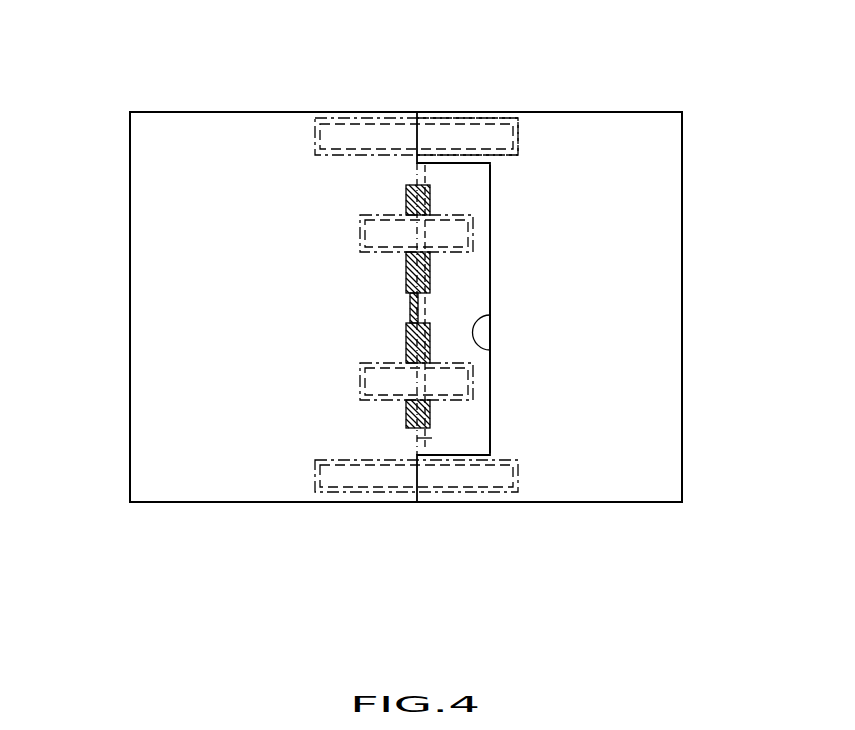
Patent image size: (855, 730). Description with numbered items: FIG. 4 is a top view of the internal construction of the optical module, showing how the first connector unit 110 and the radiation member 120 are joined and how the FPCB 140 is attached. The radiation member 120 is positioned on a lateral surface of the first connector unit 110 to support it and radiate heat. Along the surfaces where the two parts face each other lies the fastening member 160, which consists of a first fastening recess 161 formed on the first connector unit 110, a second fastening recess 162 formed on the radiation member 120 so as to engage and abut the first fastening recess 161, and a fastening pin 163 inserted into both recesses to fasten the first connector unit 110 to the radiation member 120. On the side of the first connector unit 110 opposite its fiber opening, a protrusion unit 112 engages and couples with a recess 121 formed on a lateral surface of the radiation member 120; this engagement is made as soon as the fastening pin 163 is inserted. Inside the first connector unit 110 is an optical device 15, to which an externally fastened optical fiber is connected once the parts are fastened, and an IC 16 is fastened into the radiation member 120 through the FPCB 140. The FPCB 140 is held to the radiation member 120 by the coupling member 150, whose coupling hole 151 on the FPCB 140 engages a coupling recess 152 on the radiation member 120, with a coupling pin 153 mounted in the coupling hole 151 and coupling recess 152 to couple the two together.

The optical device 15 is at (406, 189).
The IC 16 is at (410, 321).
The first connector unit 110 is at (150, 236).
The protrusion unit 112 is at (490, 351).
The radiation member 120 is at (578, 136).
The recess 121 is at (490, 287).
The FPCB 140 is at (432, 438).
The coupling member 150 is at (332, 493).
The coupling hole 151 is at (361, 382).
The coupling recess 152 is at (382, 488).
The coupling pin 153 is at (381, 385).
The fastening member 160 is at (416, 77).
The first fastening recess 161 is at (333, 119).
The second fastening recess 162 is at (467, 97).
The fastening pin 163 is at (382, 140).